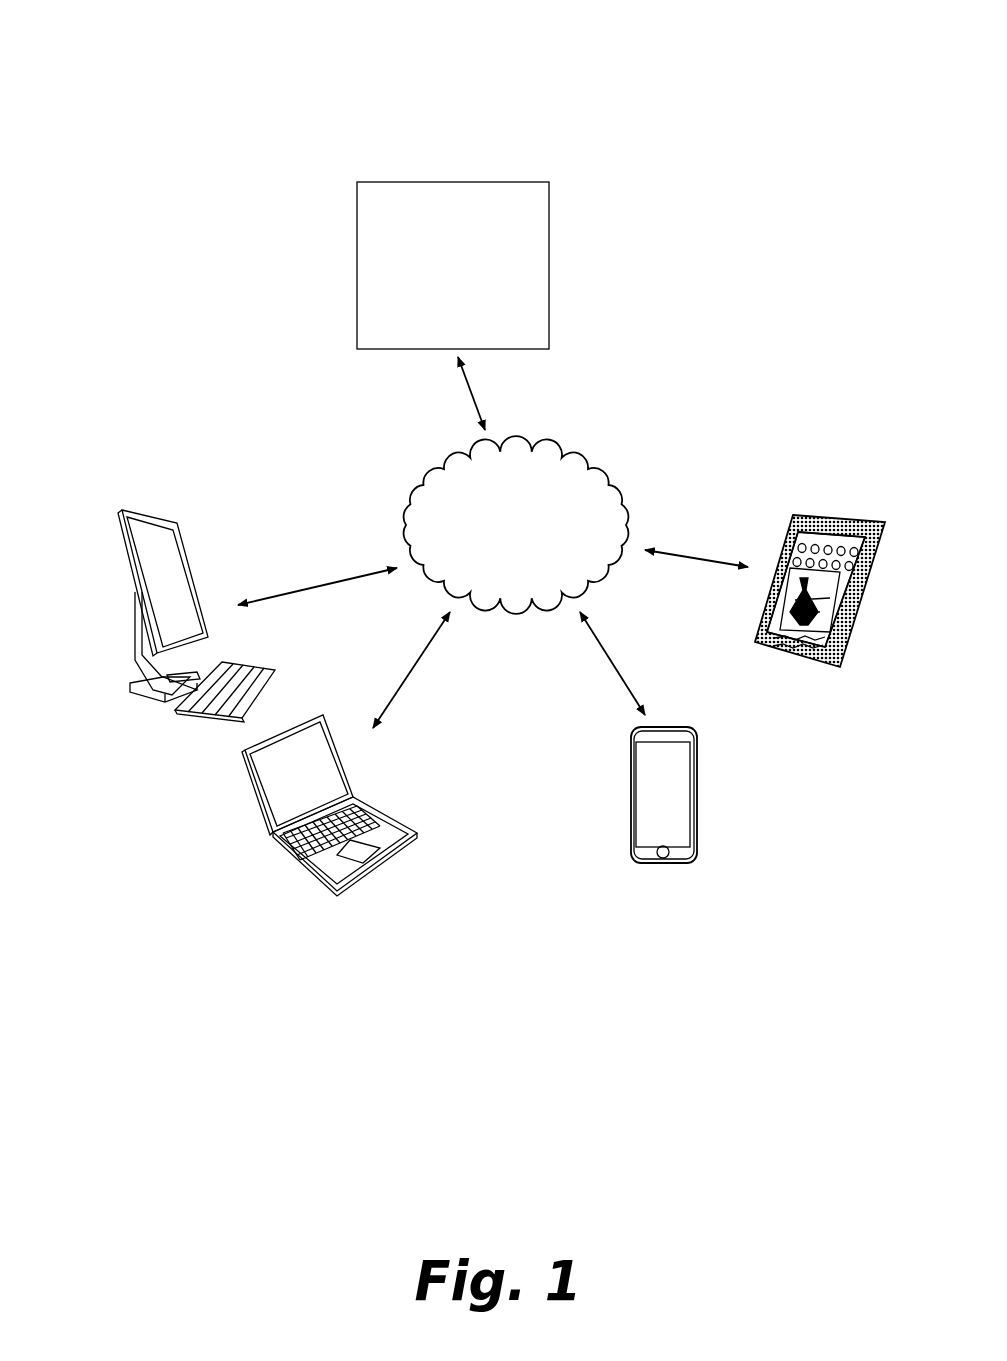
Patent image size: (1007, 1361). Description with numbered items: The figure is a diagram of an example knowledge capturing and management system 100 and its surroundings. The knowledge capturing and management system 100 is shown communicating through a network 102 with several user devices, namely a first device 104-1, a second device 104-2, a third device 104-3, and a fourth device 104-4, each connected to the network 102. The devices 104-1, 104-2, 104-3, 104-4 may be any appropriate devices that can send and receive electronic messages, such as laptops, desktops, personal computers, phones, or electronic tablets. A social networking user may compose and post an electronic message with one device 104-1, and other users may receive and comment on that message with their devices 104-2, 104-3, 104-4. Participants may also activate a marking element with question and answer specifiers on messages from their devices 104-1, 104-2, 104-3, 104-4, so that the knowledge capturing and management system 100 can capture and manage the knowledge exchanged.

The knowledge capturing and management system 100 is at (252, 108).
The network 102 is at (438, 521).
The device 104-1 is at (181, 605).
The device 104-2 is at (305, 777).
The device 104-3 is at (653, 795).
The device 104-4 is at (830, 543).